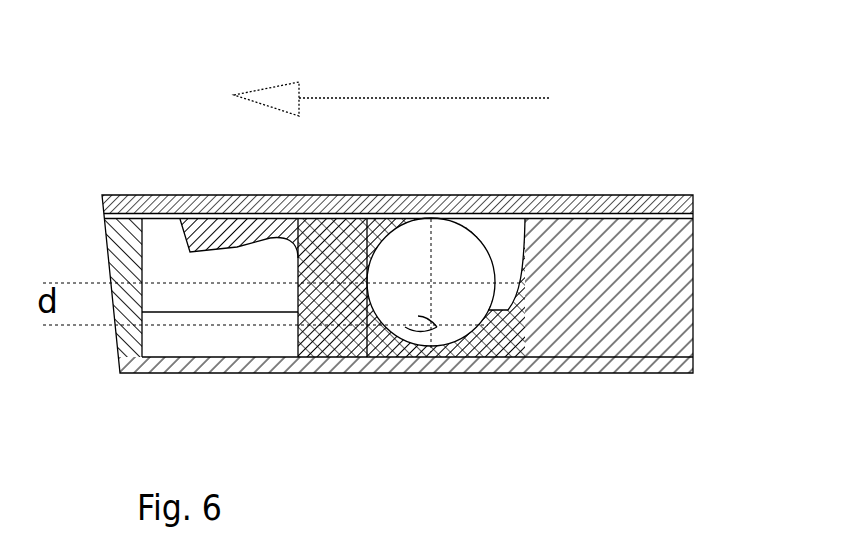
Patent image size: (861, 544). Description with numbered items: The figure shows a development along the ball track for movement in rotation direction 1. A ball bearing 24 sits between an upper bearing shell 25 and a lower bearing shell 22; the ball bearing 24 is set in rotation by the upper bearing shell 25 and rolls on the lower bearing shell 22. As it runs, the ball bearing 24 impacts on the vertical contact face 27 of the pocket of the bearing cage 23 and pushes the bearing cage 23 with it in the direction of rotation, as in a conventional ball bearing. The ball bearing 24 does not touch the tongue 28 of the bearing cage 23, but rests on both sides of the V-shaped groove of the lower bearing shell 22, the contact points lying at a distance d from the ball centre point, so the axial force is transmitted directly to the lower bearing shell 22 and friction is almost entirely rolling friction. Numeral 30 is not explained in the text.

The rotation direction 1 is at (392, 59).
The lower bearing shell 22 is at (690, 359).
The bearing cage 23 is at (676, 283).
The ball bearing 24 is at (480, 330).
The upper bearing shell 25 is at (672, 196).
The contact surface 27 is at (352, 283).
The tongue 28 is at (481, 308).
The pocket 30 is at (405, 327).